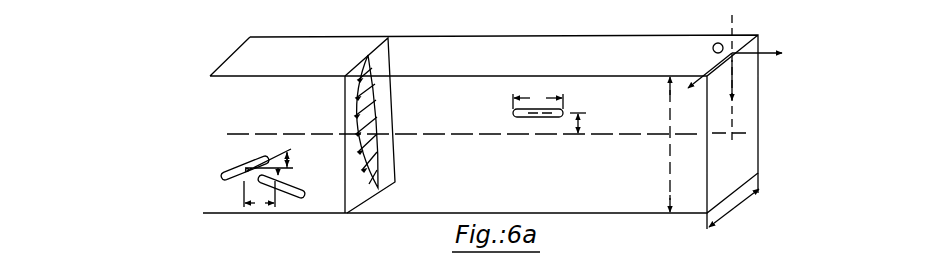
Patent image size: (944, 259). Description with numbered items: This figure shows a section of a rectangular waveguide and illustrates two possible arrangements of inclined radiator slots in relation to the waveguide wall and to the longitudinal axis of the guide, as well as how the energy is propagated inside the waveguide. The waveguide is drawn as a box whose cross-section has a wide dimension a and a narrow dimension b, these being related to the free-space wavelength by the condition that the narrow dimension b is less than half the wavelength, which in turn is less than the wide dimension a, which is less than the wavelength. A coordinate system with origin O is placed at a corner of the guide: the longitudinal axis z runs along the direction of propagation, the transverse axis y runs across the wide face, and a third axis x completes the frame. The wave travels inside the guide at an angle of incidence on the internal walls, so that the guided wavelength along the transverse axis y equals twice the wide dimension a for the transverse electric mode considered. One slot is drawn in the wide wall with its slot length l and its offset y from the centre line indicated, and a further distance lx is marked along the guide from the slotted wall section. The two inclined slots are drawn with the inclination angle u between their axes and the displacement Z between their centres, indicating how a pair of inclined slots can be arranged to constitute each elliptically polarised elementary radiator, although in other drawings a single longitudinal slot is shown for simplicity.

The rotation angle u is at (274, 162).
The displacement Z is at (259, 196).
The distance lx is at (339, 155).
The element length l is at (538, 97).
The y coordinate / offset y is at (658, 79).
The box height a is at (661, 144).
The origin O is at (717, 48).
The z axis z is at (763, 53).
The x axis x is at (703, 77).
The box depth b is at (733, 201).